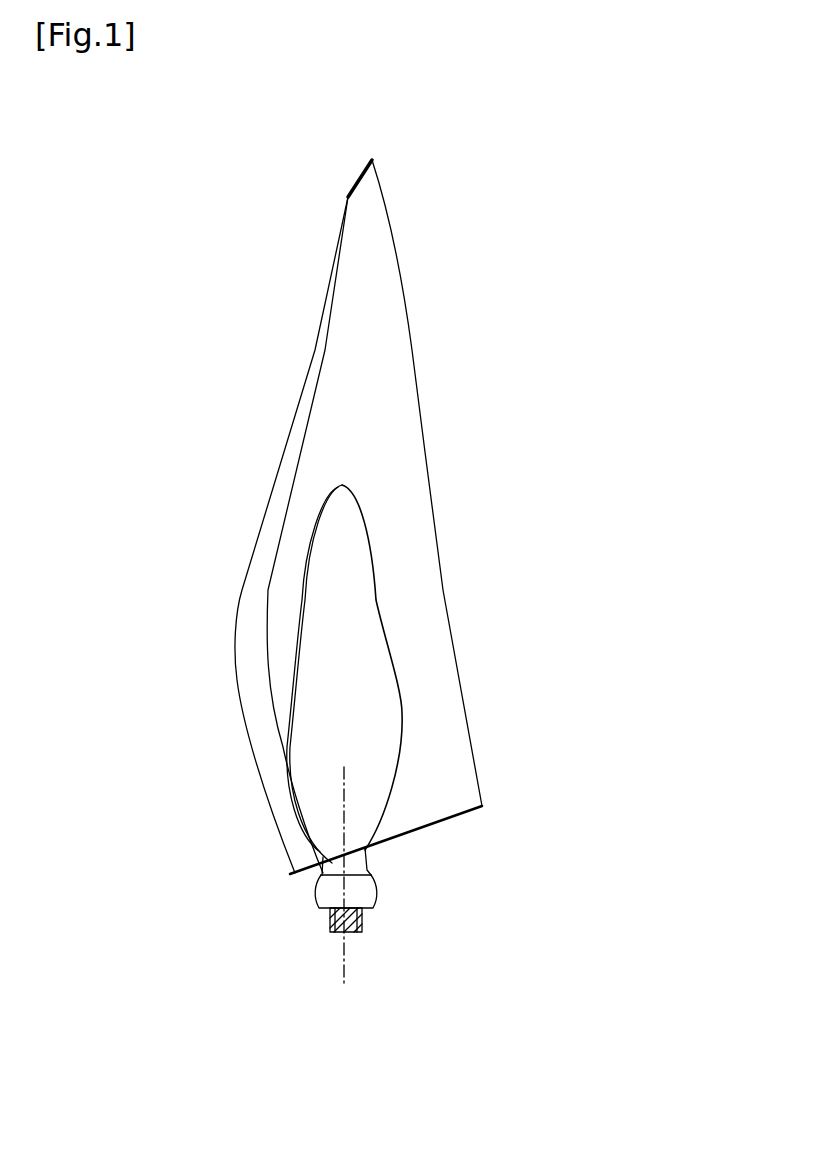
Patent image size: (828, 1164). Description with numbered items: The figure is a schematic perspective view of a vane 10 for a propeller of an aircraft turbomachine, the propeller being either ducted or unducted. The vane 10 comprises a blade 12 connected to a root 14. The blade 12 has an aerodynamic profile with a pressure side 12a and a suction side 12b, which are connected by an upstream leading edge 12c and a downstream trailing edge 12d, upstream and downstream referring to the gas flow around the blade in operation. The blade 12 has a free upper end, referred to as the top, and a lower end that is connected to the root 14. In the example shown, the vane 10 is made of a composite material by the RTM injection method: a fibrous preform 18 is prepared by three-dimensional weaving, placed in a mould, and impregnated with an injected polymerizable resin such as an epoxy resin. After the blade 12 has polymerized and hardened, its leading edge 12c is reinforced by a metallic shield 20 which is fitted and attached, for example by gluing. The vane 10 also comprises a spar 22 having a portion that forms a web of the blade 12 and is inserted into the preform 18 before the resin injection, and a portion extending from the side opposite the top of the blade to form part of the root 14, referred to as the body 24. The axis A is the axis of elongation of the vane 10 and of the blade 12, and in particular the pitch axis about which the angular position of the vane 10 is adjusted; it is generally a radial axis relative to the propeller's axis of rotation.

The vane 10 is at (626, 358).
The blade 12 is at (388, 368).
The pressure side 12a is at (367, 247).
The suction side 12b is at (348, 192).
The leading edge 12c is at (307, 368).
The trailing edge 12d is at (425, 452).
The root 14 is at (351, 863).
The fibrous preform 18 is at (420, 560).
The metallic shield 20 is at (288, 481).
The spar 22 is at (357, 663).
The body 24 is at (340, 870).
The axis of elongation A is at (350, 963).